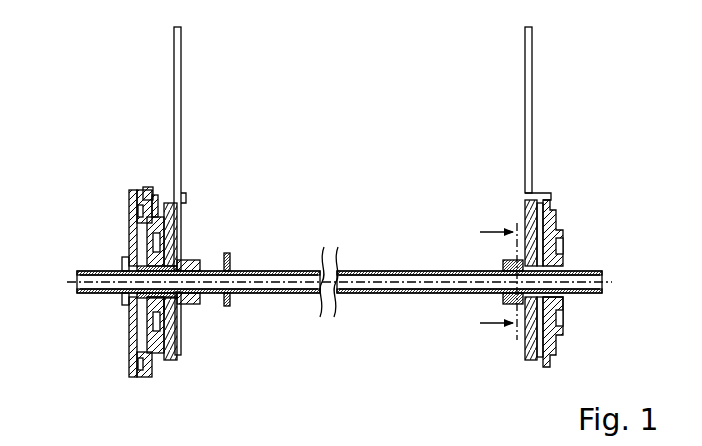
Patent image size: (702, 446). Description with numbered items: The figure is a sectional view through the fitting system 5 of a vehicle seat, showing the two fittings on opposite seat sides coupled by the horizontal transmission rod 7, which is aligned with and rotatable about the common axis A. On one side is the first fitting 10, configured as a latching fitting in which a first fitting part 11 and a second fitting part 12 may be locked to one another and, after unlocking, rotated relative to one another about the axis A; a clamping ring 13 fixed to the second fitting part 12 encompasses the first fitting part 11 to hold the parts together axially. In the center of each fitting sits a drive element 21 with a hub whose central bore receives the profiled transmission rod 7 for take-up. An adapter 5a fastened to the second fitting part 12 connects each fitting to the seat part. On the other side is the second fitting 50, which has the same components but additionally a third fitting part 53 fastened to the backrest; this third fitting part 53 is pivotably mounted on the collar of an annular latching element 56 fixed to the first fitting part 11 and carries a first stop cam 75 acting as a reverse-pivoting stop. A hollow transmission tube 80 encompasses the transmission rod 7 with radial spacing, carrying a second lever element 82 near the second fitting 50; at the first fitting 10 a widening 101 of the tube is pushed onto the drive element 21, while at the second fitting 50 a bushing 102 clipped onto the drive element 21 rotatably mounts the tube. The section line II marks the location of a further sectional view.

The fitting system 5 is at (339, 170).
The adapter 5a is at (176, 83).
The transmission rod 7 is at (590, 273).
The first fitting 10 is at (558, 217).
The first fitting part 11 is at (148, 242).
The second fitting part 12 is at (170, 232).
The clamping ring 13 is at (551, 194).
The drive element 21 is at (146, 299).
The second fitting 50 is at (185, 204).
The third fitting part 53 is at (149, 191).
The latching element 56 is at (138, 206).
The first stop cam 75 is at (153, 198).
The transmission tube 80 is at (247, 293).
The second lever element 82 is at (231, 264).
The widening 101 is at (505, 263).
The bushing 102 is at (193, 263).
The axis A is at (67, 282).
The section line II is at (498, 274).